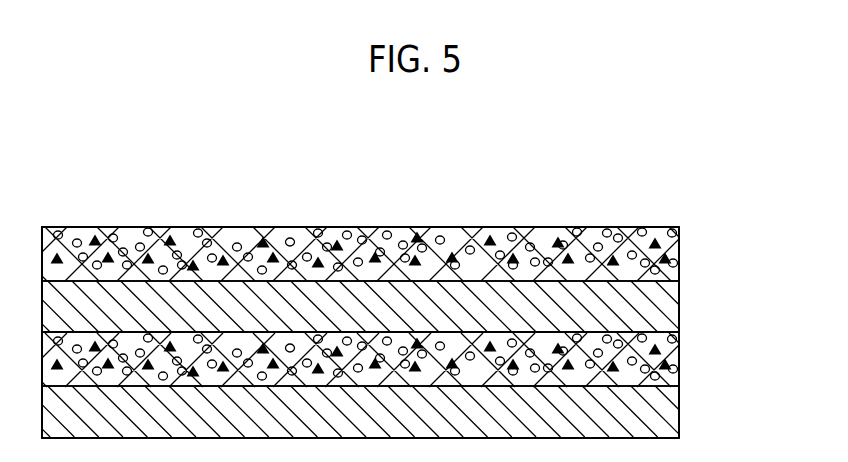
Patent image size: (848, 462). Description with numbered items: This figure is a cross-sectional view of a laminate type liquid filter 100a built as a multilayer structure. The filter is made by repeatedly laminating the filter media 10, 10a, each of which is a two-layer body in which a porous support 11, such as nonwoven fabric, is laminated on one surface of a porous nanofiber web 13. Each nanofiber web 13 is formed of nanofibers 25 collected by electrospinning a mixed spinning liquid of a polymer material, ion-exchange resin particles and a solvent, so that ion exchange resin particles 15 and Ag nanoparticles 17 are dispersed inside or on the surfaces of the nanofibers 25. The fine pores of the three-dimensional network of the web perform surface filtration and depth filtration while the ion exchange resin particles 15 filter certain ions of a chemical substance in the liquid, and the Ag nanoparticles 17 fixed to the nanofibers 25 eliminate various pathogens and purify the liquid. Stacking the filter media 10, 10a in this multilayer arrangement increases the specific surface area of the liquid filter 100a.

The laminate type liquid filter 100a is at (609, 187).
The filter medium 10 is at (748, 248).
The filter medium 10a is at (748, 352).
The nanofiber web 13 is at (678, 253).
The porous support 11 is at (678, 306).
The ion exchange resin particles 15 is at (532, 235).
The Ag nanoparticles 17 is at (470, 234).
The nanofibers 25 is at (388, 233).